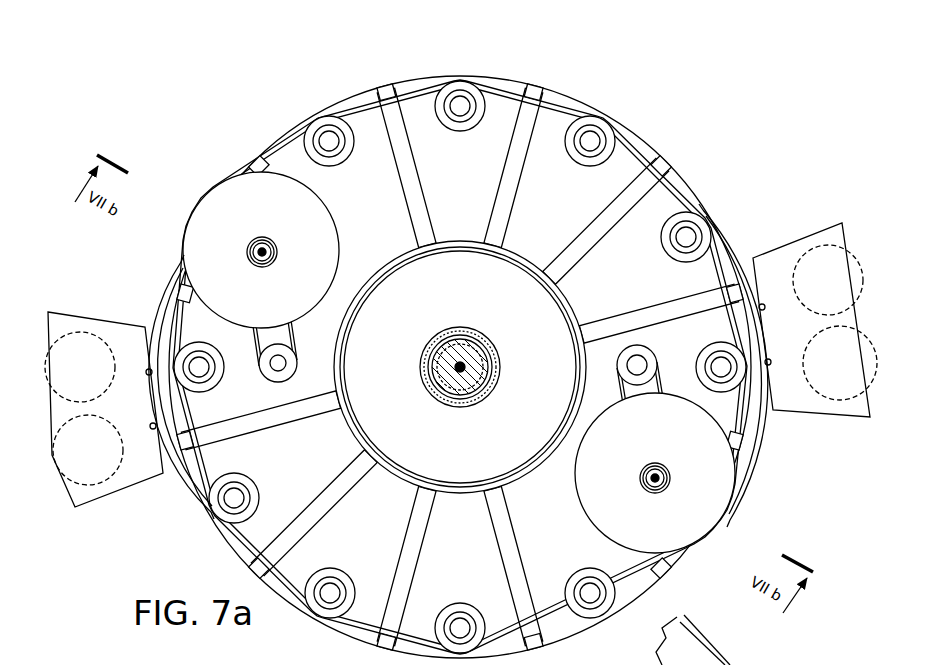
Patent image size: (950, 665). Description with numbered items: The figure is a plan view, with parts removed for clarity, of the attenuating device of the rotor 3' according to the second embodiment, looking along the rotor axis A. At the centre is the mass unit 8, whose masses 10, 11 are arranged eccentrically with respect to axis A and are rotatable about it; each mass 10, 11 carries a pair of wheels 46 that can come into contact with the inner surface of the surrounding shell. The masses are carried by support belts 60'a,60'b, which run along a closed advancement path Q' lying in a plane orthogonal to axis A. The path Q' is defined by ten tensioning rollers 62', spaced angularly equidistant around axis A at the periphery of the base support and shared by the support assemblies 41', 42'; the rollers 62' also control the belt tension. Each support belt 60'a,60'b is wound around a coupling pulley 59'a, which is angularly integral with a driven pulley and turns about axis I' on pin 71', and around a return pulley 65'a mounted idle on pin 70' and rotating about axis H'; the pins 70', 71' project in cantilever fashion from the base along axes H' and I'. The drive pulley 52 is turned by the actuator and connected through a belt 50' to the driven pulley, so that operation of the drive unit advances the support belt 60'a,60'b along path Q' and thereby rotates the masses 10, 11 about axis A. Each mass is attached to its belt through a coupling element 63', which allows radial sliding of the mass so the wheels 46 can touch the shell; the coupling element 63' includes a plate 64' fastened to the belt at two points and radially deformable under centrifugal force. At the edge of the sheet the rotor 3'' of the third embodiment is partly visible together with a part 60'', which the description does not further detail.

The rotor 3' is at (847, 64).
The mass unit 8 is at (735, 140).
The support belt 60'a,60'b is at (466, 355).
The closed path Q' is at (460, 341).
The axis A is at (448, 378).
The tensioning roller 62' is at (460, 366).
The belt 50' is at (458, 361).
The return pulley 65'a is at (258, 238).
The pin 70' is at (251, 266).
The axis H' is at (291, 256).
The coupling pulley 59'a is at (670, 478).
The pin 71' is at (639, 489).
The axis I' is at (670, 461).
The drive pulley 52 is at (284, 388).
The coupling element 63' is at (474, 365).
The plate 64' is at (459, 364).
The mass 10 is at (100, 512).
The mass 11 is at (805, 215).
The wheel 46 is at (52, 455).
The support assembly 42' is at (903, 185).
The support assembly 41' is at (43, 256).
The band segment 60'' is at (755, 640).
The rotor 3'' is at (122, 658).